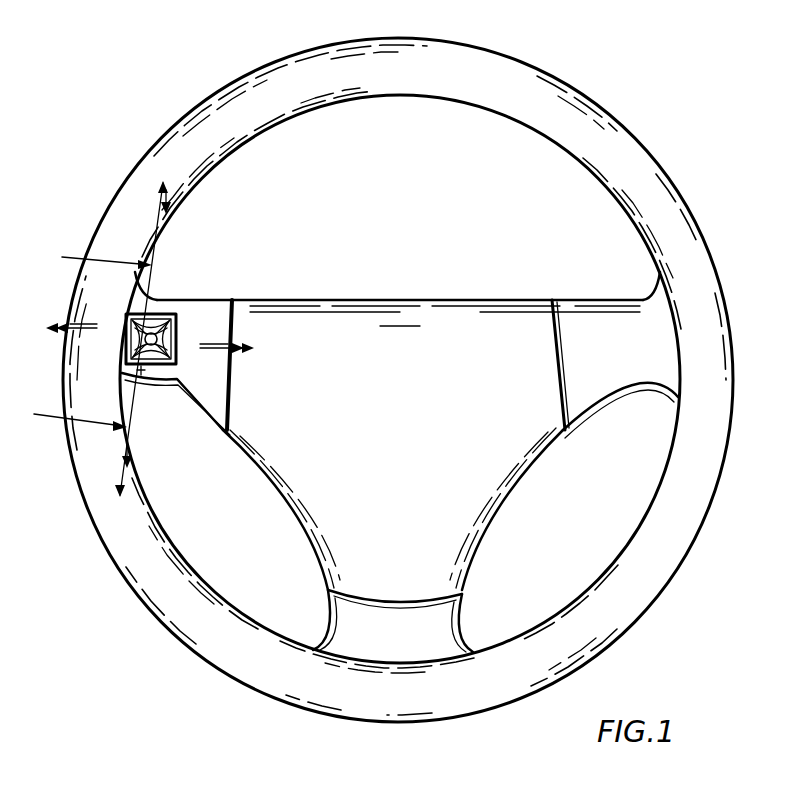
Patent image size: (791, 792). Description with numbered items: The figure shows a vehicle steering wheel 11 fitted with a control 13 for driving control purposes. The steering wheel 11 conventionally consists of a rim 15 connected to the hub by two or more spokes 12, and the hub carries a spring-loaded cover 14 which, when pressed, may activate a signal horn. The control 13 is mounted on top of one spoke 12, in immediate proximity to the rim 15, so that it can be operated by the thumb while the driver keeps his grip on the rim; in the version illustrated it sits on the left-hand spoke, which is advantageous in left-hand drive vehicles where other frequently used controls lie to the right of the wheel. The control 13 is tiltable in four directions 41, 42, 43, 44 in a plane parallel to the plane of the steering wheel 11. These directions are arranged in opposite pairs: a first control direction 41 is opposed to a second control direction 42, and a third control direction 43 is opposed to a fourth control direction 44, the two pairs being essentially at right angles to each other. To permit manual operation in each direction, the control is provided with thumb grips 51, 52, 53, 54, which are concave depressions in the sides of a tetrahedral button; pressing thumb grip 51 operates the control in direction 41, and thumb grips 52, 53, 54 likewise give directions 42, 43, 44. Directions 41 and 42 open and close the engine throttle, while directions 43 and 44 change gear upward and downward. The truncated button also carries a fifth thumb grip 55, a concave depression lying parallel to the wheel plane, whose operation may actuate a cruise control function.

The steering wheel 11 is at (370, 380).
The spoke 12 is at (183, 310).
The control 13 is at (176, 380).
The spring-loaded cover 14 is at (392, 333).
The rim 15 is at (592, 132).
The first control direction 41 is at (152, 323).
The second control direction 42 is at (122, 483).
The third control direction 43 is at (241, 355).
The fourth control direction 44 is at (59, 329).
The thumb grip 51 is at (142, 375).
The thumb grip 52 is at (153, 313).
The thumb grip 53 is at (121, 340).
The thumb grip 54 is at (174, 340).
The fifth thumb grip 55 is at (127, 323).